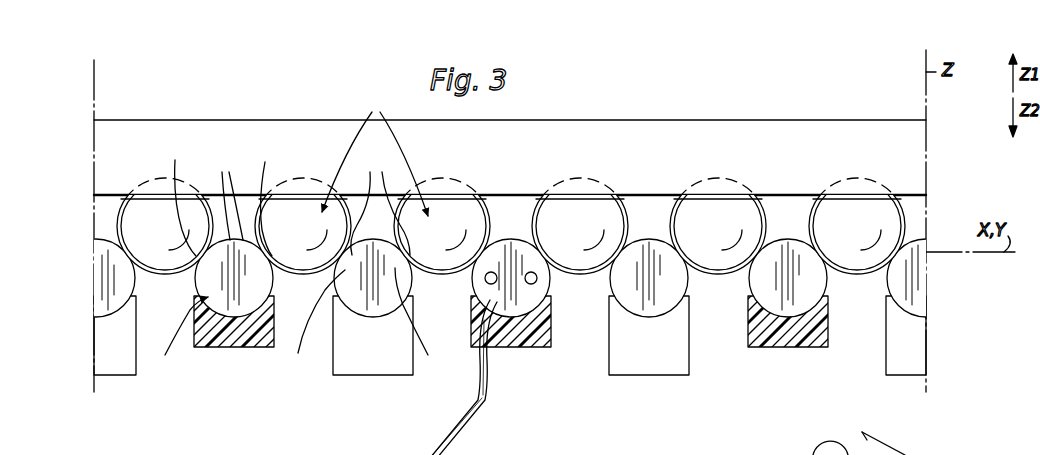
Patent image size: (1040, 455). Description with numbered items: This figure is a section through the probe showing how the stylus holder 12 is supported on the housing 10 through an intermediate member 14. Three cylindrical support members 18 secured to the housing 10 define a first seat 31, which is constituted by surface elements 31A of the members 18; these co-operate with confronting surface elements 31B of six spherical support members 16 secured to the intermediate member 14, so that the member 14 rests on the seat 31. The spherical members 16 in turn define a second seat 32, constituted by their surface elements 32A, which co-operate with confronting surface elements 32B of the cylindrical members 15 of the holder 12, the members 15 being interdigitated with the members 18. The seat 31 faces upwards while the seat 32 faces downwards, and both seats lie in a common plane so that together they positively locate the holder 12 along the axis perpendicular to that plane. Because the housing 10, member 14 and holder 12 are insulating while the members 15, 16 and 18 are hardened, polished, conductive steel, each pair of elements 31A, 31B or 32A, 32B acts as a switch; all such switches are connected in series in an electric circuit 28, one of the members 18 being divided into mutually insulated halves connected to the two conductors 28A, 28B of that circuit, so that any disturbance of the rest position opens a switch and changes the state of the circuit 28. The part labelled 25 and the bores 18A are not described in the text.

The housing 10 is at (806, 348).
The stylus holder 12 is at (916, 376).
The intermediate member 14 is at (905, 150).
The cylindrical support members of the holder 15 is at (508, 326).
The spherical support members 16 is at (150, 210).
The cylindrical support members 18 is at (508, 268).
The roller bores 18A is at (531, 272).
The drive element 25 is at (900, 452).
The electric circuit 28 is at (438, 377).
The conductor 28A is at (452, 440).
The conductor 28B is at (478, 418).
The first seat 31 is at (177, 334).
The surface elements 31A is at (225, 194).
The surface elements 31B is at (220, 196).
The second seat 32 is at (736, 228).
The surface elements 32A is at (380, 202).
The surface elements 32B is at (364, 318).